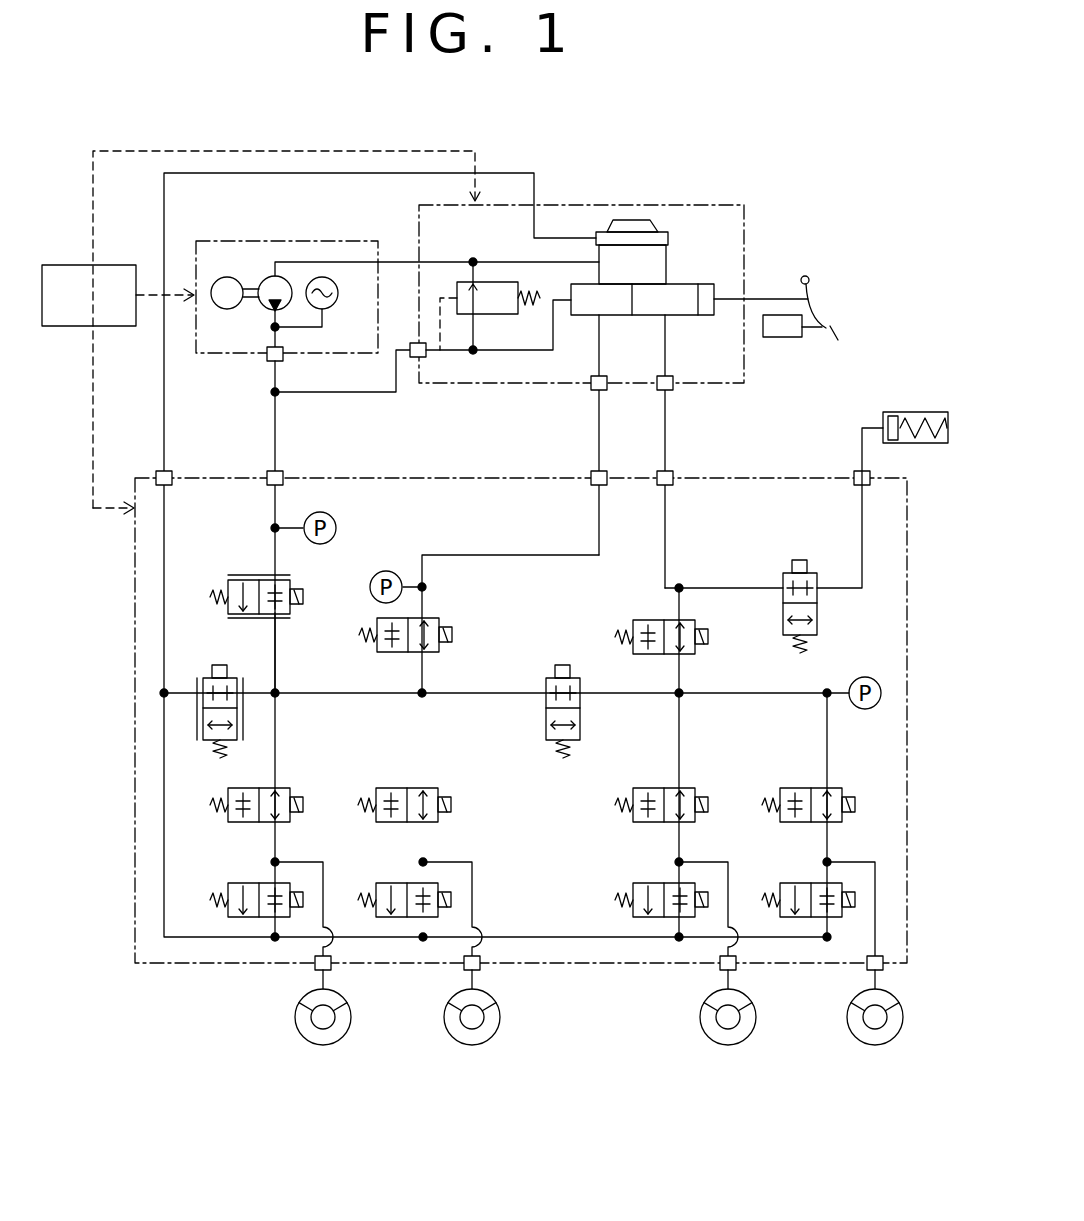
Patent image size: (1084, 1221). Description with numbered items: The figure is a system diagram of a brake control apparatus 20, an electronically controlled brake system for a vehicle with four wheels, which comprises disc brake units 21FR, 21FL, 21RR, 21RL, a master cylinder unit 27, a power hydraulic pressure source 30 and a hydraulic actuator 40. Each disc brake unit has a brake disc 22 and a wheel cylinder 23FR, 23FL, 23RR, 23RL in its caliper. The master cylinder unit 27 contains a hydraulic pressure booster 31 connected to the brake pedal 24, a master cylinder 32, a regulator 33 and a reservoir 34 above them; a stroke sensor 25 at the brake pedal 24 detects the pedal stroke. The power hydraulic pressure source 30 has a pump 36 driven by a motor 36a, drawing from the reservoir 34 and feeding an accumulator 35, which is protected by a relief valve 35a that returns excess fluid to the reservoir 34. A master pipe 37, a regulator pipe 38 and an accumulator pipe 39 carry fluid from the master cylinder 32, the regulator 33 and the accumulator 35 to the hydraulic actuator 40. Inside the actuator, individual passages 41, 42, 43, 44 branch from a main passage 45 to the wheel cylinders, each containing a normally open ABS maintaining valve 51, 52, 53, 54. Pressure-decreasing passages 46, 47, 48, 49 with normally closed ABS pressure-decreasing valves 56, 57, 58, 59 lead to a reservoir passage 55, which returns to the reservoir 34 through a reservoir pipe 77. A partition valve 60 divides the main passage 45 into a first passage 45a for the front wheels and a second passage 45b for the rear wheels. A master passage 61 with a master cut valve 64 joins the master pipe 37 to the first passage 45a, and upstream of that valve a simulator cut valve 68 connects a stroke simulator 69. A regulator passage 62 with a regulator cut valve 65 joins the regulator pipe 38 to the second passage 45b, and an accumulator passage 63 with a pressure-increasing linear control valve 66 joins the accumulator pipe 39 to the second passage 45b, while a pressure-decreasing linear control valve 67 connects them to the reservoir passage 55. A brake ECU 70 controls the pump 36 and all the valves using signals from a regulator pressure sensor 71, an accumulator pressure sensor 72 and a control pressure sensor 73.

The brake control apparatus 20 is at (786, 172).
The disc brake unit 21RR is at (290, 1033).
The disc brake unit 21RL is at (440, 1033).
The disc brake unit 21FR is at (695, 1033).
The disc brake unit 21FL is at (843, 1033).
The brake disc 22 is at (547, 1030).
The wheel cylinder 23RR is at (300, 999).
The wheel cylinder 23RL is at (450, 999).
The wheel cylinder 23FR is at (702, 999).
The wheel cylinder 23FL is at (852, 999).
The brake pedal 24 is at (843, 333).
The stroke sensor 25 is at (784, 342).
The master cylinder unit 27 is at (698, 190).
The power hydraulic pressure source 30 is at (287, 267).
The hydraulic pressure booster 31 is at (704, 270).
The master cylinder 32 is at (648, 322).
The regulator 33 is at (580, 322).
The reservoir 34 is at (633, 198).
The accumulator 35 is at (322, 311).
The relief valve 35a is at (497, 318).
The pump 36 is at (262, 318).
The motor 36a is at (232, 277).
The master pipe 37 is at (664, 438).
The regulator pipe 38 is at (598, 438).
The accumulator pipe 39 is at (276, 440).
The hydraulic actuator 40 is at (893, 478).
The individual passage 41 is at (703, 860).
The individual passage 42 is at (852, 860).
The individual passage 43 is at (304, 860).
The individual passage 44 is at (452, 860).
The main passage 45 is at (738, 690).
The first passage 45a is at (714, 698).
The second passage 45b is at (320, 698).
The pressure-decreasing passage 46 is at (672, 866).
The pressure-decreasing passage 47 is at (820, 866).
The pressure-decreasing passage 48 is at (268, 866).
The pressure-decreasing passage 49 is at (416, 866).
The ABS maintaining valve 51 is at (692, 788).
The ABS maintaining valve 52 is at (840, 788).
The ABS maintaining valve 53 is at (287, 788).
The ABS maintaining valve 54 is at (435, 788).
The reservoir passage 55 is at (188, 934).
The ABS pressure-decreasing valve 56 is at (633, 888).
The ABS pressure-decreasing valve 57 is at (780, 888).
The ABS pressure-decreasing valve 58 is at (228, 888).
The ABS pressure-decreasing valve 59 is at (376, 888).
The partition valve 60 is at (580, 736).
The master passage 61 is at (664, 572).
The regulator passage 62 is at (500, 552).
The accumulator passage 63 is at (276, 665).
The master cut valve 64 is at (706, 617).
The regulator cut valve 65 is at (450, 612).
The pressure-increasing linear control valve 66 is at (298, 608).
The pressure-decreasing linear control valve 67 is at (215, 664).
The simulator cut valve 68 is at (818, 626).
The stroke simulator 69 is at (917, 412).
The brake ECU 70 is at (58, 264).
The regulator pressure sensor 71 is at (386, 568).
The accumulator pressure sensor 72 is at (330, 512).
The control pressure sensor 73 is at (852, 680).
The reservoir pipe 77 is at (165, 410).